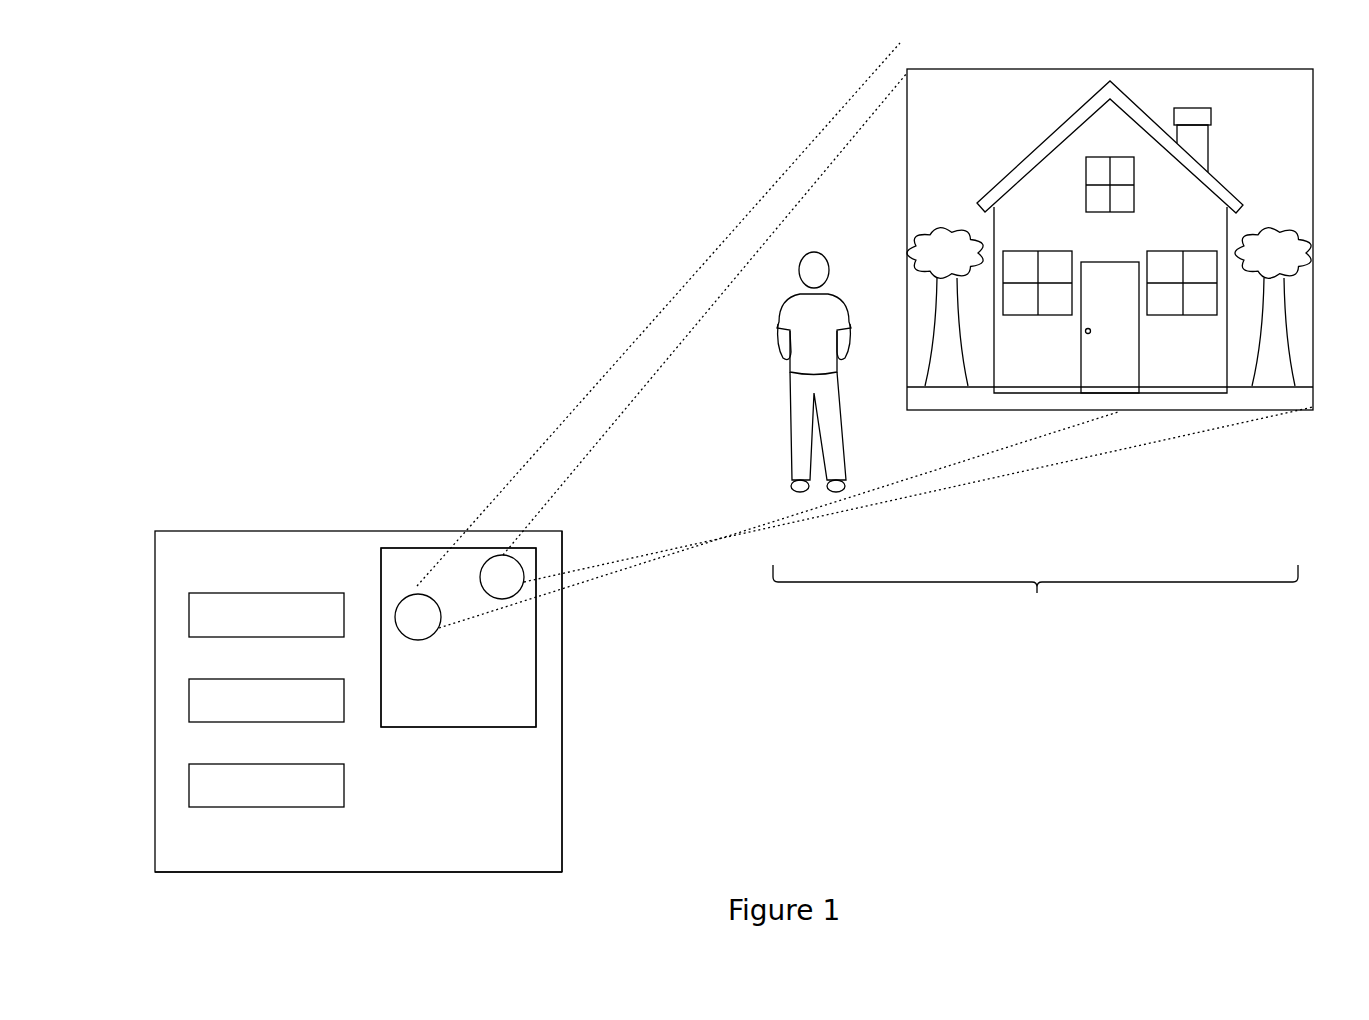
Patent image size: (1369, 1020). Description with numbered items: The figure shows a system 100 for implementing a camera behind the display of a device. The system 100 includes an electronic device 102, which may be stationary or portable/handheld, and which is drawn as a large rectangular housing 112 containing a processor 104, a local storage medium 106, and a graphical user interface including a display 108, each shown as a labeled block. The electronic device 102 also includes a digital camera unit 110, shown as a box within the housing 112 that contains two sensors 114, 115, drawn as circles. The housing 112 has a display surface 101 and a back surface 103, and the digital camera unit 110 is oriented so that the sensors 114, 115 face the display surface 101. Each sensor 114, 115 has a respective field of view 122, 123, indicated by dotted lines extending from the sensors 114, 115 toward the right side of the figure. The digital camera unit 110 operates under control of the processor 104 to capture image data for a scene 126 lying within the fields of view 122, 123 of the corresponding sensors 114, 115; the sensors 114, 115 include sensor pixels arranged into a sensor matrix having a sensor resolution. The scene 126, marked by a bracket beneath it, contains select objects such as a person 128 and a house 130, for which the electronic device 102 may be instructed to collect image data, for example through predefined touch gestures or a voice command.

The system 100 is at (420, 90).
The display surface 101 is at (258, 852).
The electronic device 102 is at (575, 670).
The back surface 103 is at (364, 880).
The processor 104 is at (293, 593).
The local storage medium 106 is at (293, 679).
The graphical user interface 108 is at (293, 764).
The digital camera unit 110 is at (487, 728).
The housing 112 is at (563, 795).
The sensor 114 is at (524, 566).
The sensor 115 is at (418, 594).
The field of view 122 is at (688, 330).
The field of view 123 is at (653, 370).
The scene 126 is at (1035, 594).
The person 128 is at (830, 240).
The house 130 is at (1235, 55).